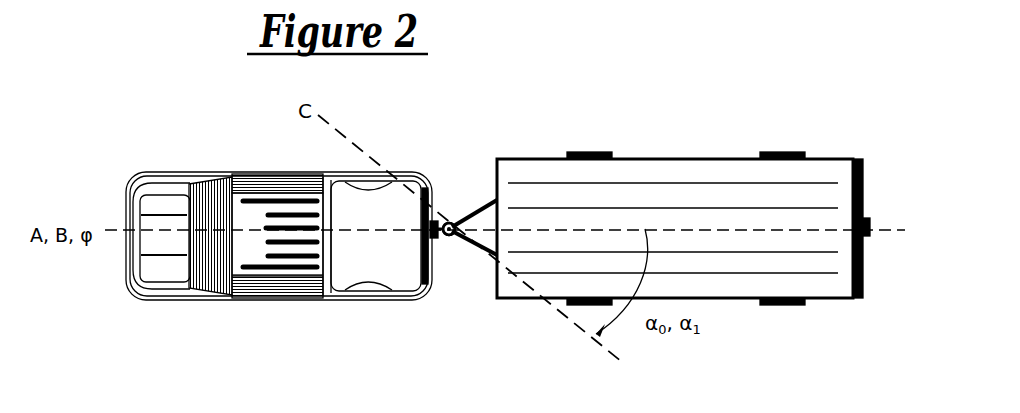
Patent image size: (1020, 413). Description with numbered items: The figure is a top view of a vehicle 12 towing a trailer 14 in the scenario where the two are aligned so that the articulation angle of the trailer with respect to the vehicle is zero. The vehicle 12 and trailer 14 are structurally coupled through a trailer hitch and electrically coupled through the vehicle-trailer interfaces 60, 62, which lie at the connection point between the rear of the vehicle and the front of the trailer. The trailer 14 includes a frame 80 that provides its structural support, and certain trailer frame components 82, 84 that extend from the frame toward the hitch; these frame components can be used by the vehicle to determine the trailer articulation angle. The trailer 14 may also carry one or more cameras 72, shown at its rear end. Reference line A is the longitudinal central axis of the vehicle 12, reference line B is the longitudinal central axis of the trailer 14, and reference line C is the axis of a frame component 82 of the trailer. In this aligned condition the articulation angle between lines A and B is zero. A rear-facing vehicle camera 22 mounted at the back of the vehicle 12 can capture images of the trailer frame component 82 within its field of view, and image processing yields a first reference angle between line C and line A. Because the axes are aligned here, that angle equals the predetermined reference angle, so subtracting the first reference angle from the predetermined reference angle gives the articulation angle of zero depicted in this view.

The vehicle 12 is at (186, 173).
The trailer 14 is at (690, 160).
The rear-facing vehicle camera 22 is at (437, 241).
The vehicle-trailer interface 60 is at (455, 222).
The vehicle-trailer interface 62 is at (449, 229).
The camera 72 is at (870, 236).
The frame 80 is at (493, 252).
The trailer frame component 82 is at (466, 243).
The trailer frame component 84 is at (481, 207).